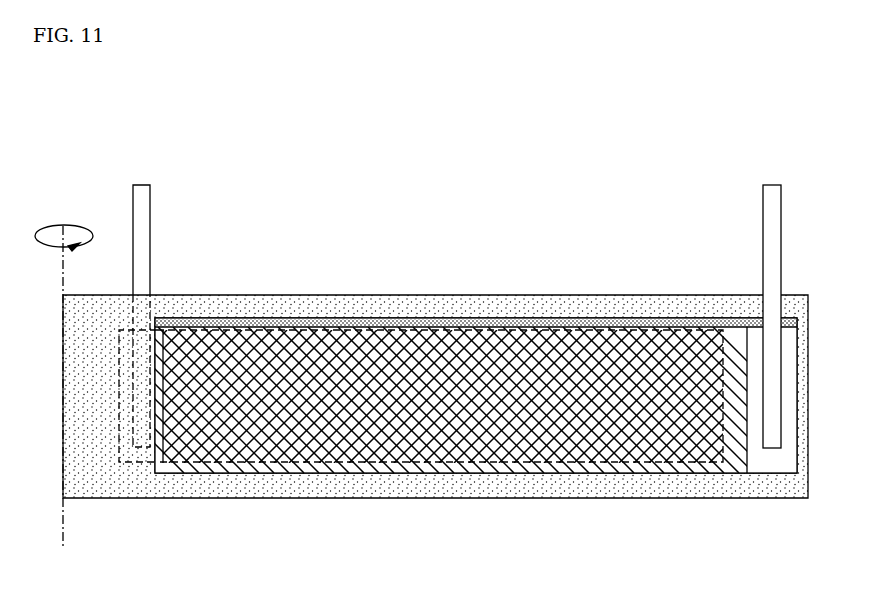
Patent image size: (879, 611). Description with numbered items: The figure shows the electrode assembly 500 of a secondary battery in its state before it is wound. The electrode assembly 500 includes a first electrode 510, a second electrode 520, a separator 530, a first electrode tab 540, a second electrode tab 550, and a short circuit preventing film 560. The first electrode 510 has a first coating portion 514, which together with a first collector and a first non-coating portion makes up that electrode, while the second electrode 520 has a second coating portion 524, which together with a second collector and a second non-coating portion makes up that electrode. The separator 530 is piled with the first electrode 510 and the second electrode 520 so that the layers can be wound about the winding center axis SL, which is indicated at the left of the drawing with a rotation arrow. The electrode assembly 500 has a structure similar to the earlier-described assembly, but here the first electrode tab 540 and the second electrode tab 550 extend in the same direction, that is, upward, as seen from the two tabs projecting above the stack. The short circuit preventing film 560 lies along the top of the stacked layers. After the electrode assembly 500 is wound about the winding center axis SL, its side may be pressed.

The electrode assembly 500 is at (108, 120).
The winding center axis SL is at (53, 226).
The first electrode 510 is at (142, 463).
The first coating portion 514 is at (382, 348).
The second electrode 520 is at (555, 473).
The second coating portion 524 is at (462, 367).
The separator 530 is at (260, 295).
The first electrode tab 540 is at (142, 214).
The second electrode tab 550 is at (763, 236).
The short circuit preventing film 560 is at (583, 320).